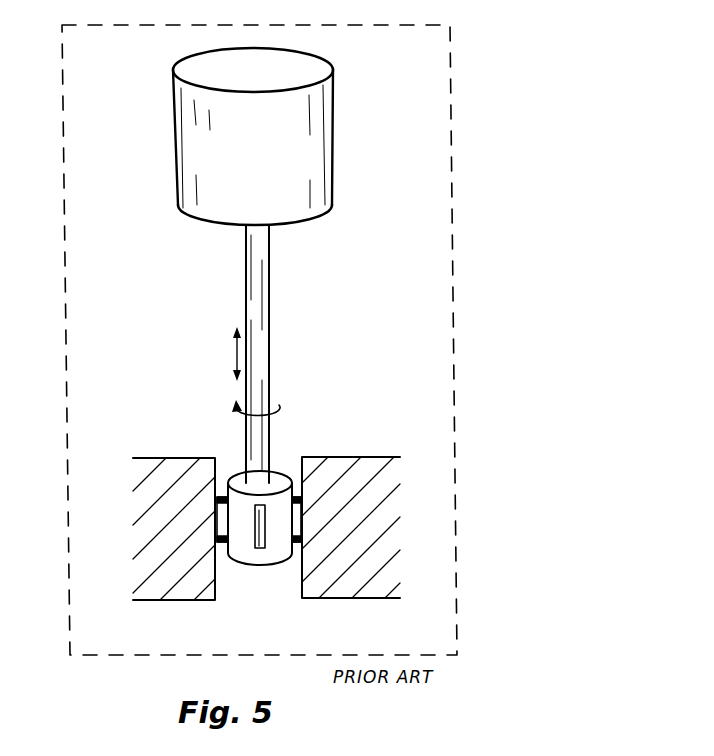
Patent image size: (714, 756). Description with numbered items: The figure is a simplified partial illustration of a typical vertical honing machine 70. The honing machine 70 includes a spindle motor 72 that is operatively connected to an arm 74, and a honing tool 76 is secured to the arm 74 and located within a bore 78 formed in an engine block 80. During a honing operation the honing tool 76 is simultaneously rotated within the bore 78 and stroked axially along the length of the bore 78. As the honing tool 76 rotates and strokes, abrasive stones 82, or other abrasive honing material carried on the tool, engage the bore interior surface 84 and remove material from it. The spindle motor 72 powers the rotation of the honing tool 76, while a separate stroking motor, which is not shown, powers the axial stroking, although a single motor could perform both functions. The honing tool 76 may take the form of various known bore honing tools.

The vertical honing machine 70 is at (452, 57).
The spindle motor 72 is at (330, 62).
The arm 74 is at (270, 268).
The honing tool 76 is at (285, 472).
The bore 78 is at (234, 450).
The engine block 80 is at (145, 458).
The abrasive stones 82 is at (228, 547).
The bore interior surface 84 is at (216, 592).